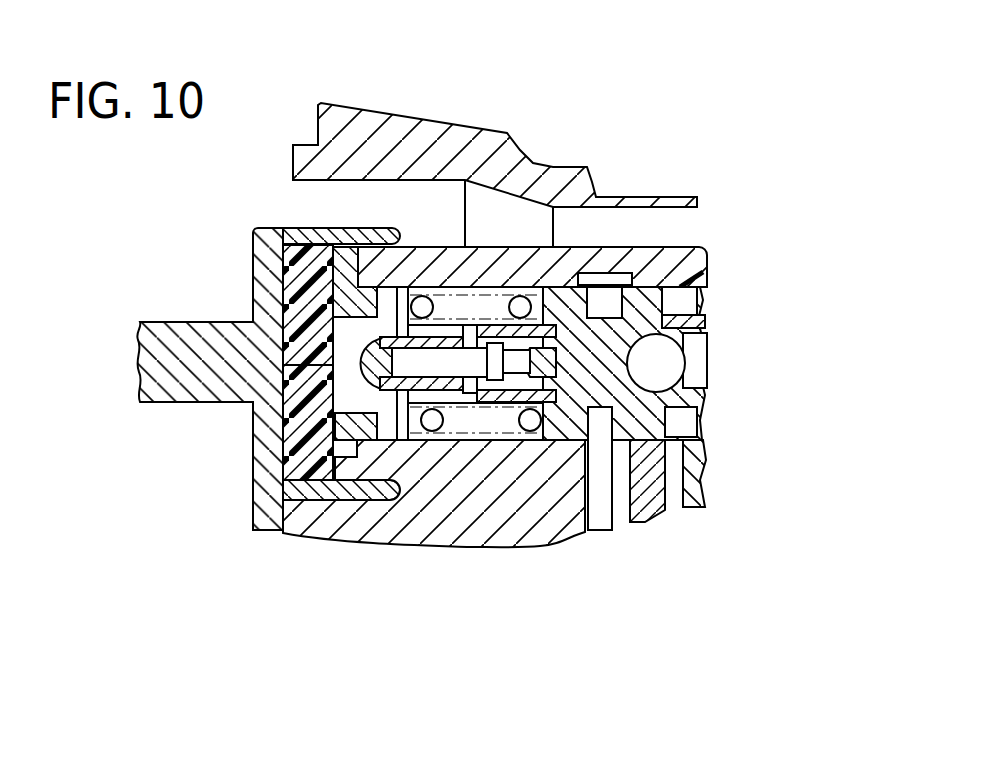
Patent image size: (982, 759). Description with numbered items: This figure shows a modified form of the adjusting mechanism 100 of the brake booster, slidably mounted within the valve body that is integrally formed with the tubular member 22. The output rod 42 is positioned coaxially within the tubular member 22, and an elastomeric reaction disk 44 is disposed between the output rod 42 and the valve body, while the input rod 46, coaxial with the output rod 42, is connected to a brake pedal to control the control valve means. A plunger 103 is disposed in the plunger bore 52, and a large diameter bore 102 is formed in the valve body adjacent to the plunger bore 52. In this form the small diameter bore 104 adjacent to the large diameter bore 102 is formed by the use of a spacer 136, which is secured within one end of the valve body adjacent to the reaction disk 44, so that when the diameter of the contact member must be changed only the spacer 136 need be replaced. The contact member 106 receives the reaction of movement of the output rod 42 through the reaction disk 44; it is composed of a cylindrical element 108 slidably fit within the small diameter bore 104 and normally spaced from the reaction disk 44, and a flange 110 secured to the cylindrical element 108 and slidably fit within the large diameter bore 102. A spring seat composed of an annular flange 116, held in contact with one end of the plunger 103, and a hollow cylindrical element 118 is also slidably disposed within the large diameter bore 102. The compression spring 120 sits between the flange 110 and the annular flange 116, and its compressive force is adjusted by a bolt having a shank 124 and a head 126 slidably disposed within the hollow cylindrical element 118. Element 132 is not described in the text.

The tubular member 22 is at (406, 130).
The output rod 42 is at (148, 358).
The reaction disk 44 is at (298, 382).
The input rod 46 is at (697, 358).
The plunger bore 52 is at (707, 373).
The adjusting mechanism 100 is at (501, 270).
The large diameter bore 102 is at (442, 303).
The plunger 103 is at (605, 385).
The small diameter bore 104 is at (318, 268).
The contact member 106 is at (358, 395).
The cylindrical element 108 is at (355, 345).
The flange 110 is at (450, 365).
The annular flange 116 is at (562, 303).
The hollow cylindrical element 118 is at (522, 385).
The compression spring 120 is at (520, 300).
The shank 124 is at (445, 400).
The head 126 is at (500, 385).
The flange 132 is at (490, 380).
The spacer 136 is at (348, 243).